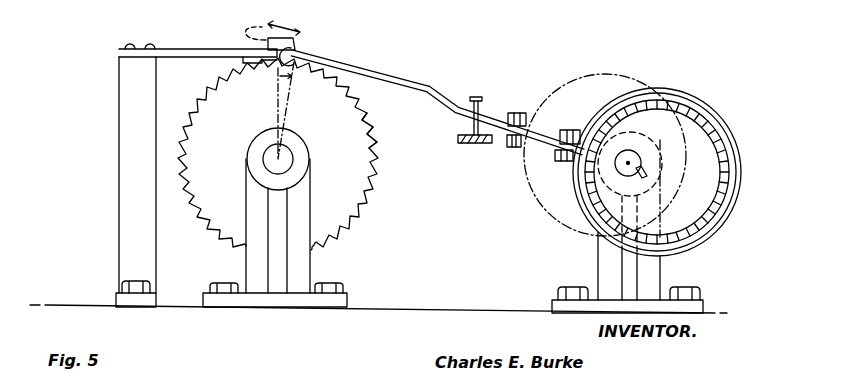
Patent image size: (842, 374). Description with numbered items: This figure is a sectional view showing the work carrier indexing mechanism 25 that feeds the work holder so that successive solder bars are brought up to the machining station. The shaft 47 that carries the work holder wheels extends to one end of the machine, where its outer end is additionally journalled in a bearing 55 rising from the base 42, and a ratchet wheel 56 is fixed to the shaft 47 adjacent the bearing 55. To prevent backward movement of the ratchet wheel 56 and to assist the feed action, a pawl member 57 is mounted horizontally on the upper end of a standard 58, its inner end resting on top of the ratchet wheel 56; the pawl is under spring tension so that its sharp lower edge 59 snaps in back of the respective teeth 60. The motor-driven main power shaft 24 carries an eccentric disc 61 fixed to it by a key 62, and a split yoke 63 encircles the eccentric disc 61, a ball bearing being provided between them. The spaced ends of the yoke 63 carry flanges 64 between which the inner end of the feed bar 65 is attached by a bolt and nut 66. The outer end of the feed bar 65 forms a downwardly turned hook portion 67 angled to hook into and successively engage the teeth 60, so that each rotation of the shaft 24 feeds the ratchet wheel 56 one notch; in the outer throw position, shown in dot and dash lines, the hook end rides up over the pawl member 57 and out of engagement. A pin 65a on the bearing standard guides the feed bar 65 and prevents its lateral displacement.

The main power shaft 24 is at (643, 159).
The work carrier indexing mechanism 25 is at (370, 62).
The base 42 is at (385, 309).
The shaft 47 is at (288, 160).
The bearing 55 is at (258, 201).
The ratchet wheel 56 is at (368, 154).
The pawl member 57 is at (194, 49).
The standard 58 is at (128, 145).
The sharp lower edge 59 is at (276, 57).
The teeth 60 is at (373, 131).
The eccentric disc 61 is at (695, 150).
The key 62 is at (645, 179).
The yoke 63 is at (691, 253).
The flanges 64 is at (560, 136).
The feed bar 65 is at (414, 84).
The pin 65a is at (478, 99).
The bolt and nut 66 is at (577, 131).
The hook portion 67 is at (302, 50).